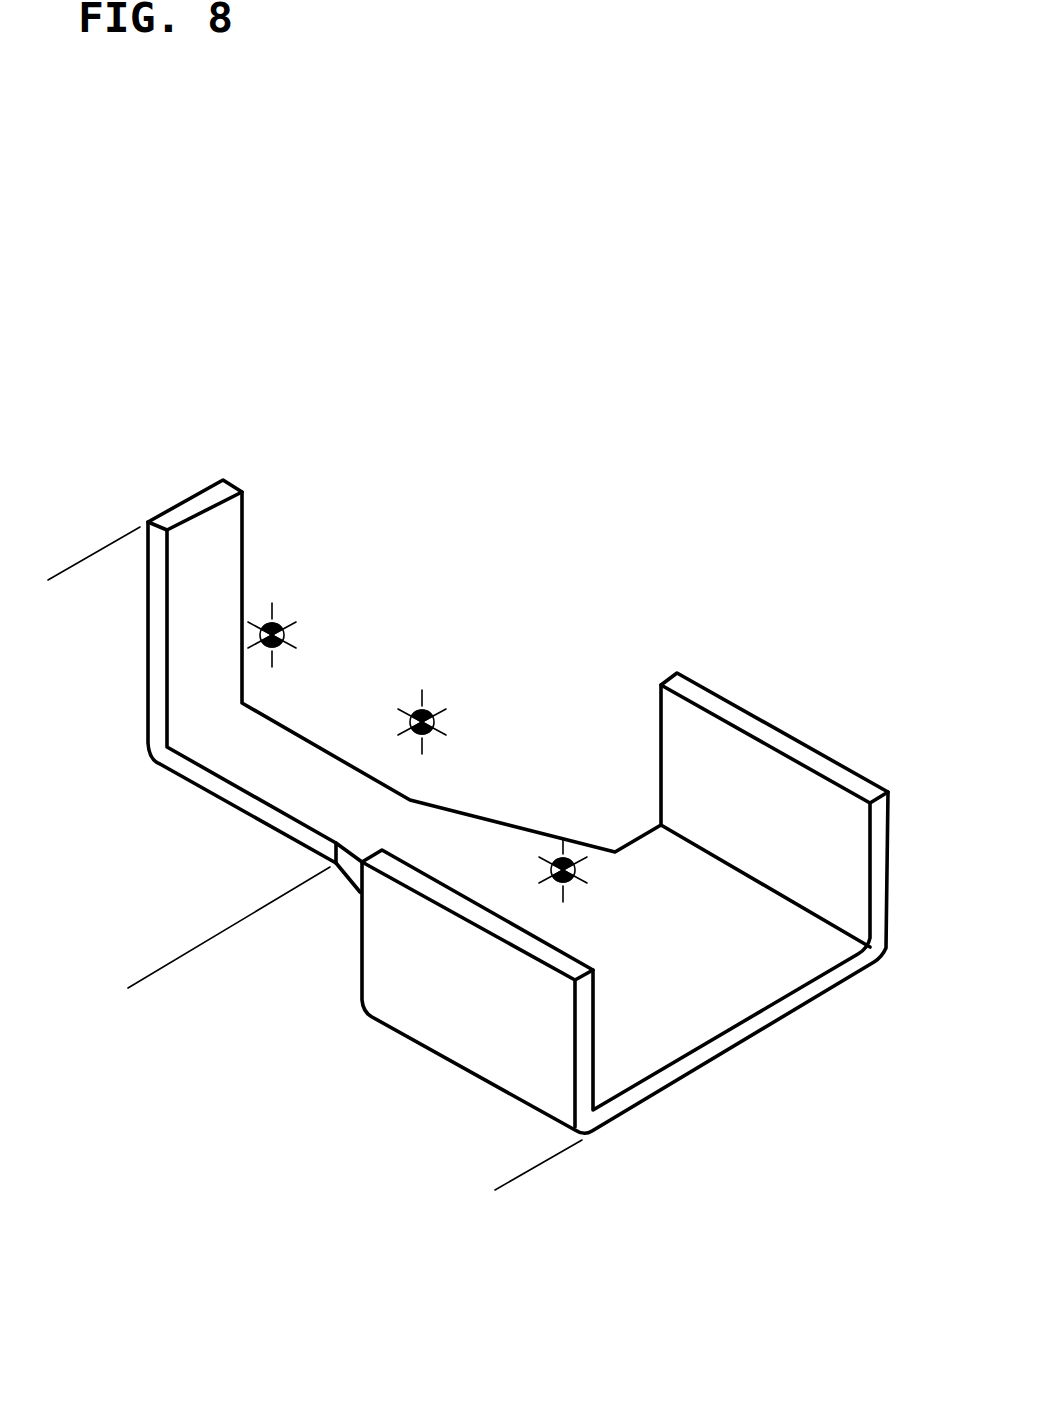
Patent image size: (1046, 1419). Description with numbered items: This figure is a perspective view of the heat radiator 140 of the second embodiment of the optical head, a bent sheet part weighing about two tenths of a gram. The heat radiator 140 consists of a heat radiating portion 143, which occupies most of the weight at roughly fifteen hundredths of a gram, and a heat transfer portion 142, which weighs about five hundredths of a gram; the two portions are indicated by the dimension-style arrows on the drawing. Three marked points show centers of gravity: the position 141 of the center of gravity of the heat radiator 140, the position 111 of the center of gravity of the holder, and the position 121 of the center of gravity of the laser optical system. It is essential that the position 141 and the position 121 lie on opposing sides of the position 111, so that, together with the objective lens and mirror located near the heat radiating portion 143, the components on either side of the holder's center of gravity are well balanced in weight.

The heat radiator 140 is at (750, 1082).
The position of the center of gravity of the laser optical system 121 is at (287, 612).
The position of the center of gravity of the holder 111 is at (438, 697).
The position of the center of gravity of the heat radiator 141 is at (577, 837).
The heat transfer portion 142 is at (247, 918).
The heat radiating portion 143 is at (507, 1182).